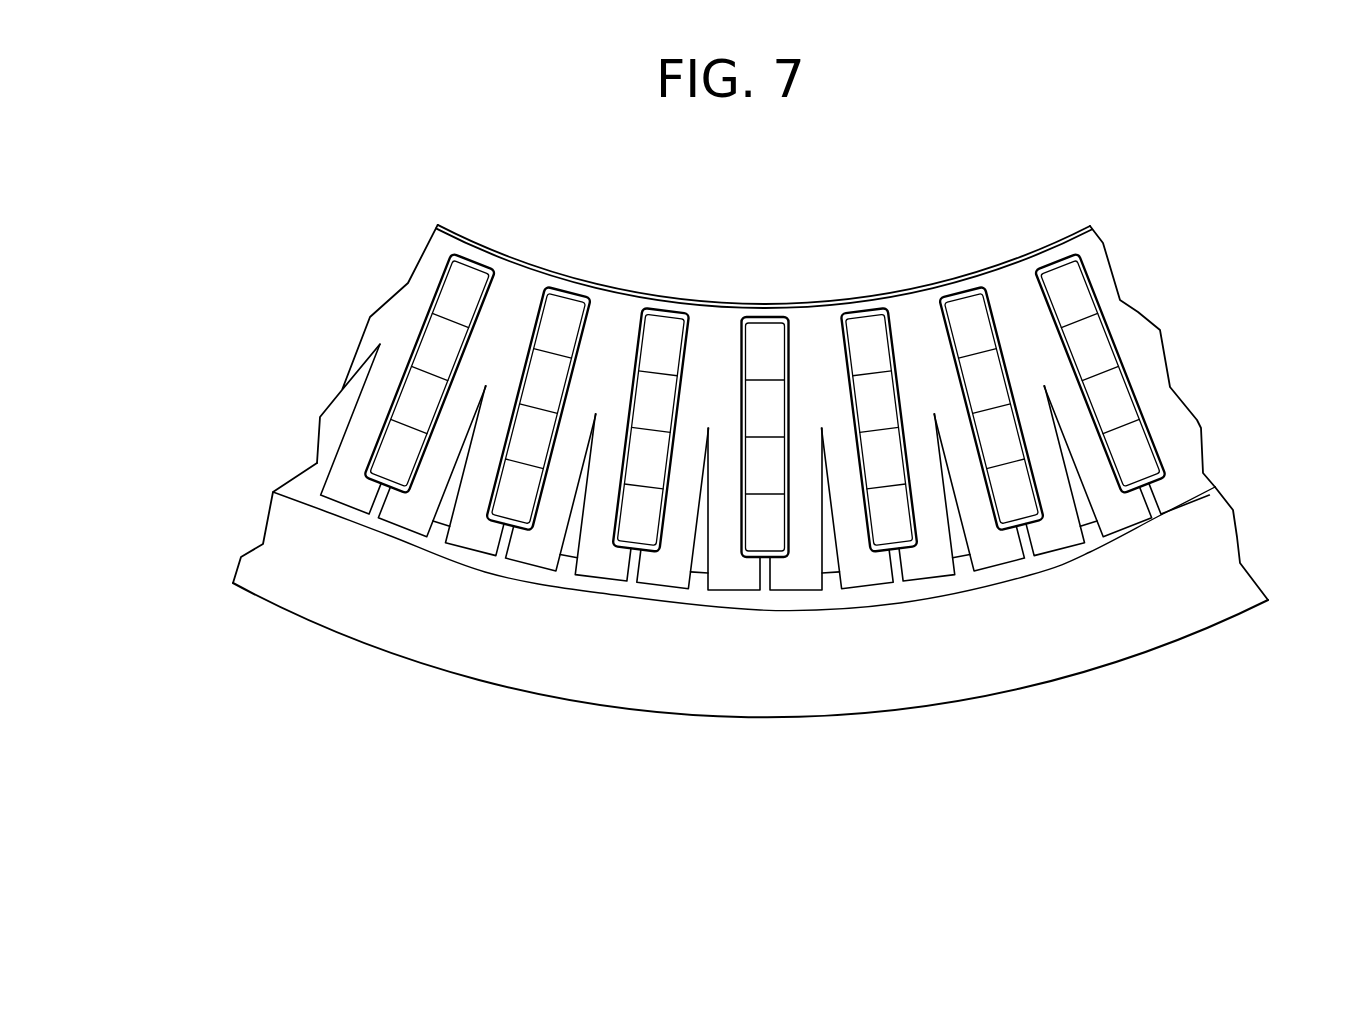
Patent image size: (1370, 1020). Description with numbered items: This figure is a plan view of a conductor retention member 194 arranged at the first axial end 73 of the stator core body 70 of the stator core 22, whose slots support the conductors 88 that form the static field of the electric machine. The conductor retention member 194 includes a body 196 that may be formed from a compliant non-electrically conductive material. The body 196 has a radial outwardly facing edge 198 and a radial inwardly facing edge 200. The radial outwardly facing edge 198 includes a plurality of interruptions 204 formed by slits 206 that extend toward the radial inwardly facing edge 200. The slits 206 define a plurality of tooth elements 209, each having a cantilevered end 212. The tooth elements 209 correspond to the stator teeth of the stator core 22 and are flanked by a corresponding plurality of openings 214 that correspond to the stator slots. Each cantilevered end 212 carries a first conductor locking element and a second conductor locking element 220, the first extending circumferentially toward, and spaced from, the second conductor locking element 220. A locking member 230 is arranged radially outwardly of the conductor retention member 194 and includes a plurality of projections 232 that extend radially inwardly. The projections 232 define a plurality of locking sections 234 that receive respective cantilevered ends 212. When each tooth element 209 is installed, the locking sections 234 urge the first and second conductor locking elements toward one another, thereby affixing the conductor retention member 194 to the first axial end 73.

The stator core 22 is at (220, 535).
The stator core body 70 is at (302, 618).
The first axial end 73 is at (308, 535).
The conductors 88 is at (1108, 393).
The conductor retention member 194 is at (1222, 471).
The body 196 is at (940, 275).
The radial outwardly facing edge 198 is at (530, 262).
The radial inwardly facing edge 200 is at (878, 588).
The interruptions 204 is at (696, 602).
The slits 206 is at (707, 523).
The tooth elements 209 is at (927, 552).
The cantilevered end 212 is at (895, 507).
The openings 214 is at (775, 400).
The second conductor locking element 220 is at (795, 580).
The locking member 230 is at (1158, 542).
The projections 232 is at (967, 565).
The locking sections 234 is at (1116, 518).